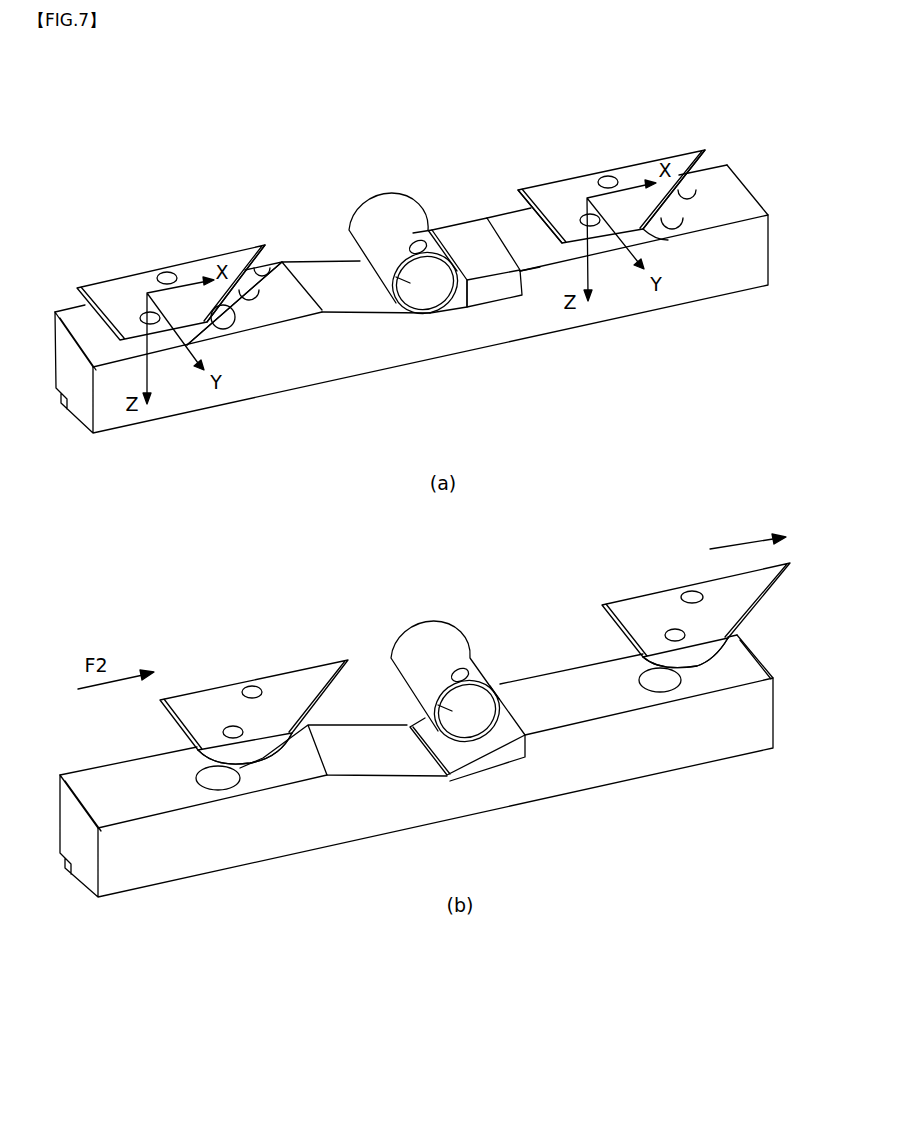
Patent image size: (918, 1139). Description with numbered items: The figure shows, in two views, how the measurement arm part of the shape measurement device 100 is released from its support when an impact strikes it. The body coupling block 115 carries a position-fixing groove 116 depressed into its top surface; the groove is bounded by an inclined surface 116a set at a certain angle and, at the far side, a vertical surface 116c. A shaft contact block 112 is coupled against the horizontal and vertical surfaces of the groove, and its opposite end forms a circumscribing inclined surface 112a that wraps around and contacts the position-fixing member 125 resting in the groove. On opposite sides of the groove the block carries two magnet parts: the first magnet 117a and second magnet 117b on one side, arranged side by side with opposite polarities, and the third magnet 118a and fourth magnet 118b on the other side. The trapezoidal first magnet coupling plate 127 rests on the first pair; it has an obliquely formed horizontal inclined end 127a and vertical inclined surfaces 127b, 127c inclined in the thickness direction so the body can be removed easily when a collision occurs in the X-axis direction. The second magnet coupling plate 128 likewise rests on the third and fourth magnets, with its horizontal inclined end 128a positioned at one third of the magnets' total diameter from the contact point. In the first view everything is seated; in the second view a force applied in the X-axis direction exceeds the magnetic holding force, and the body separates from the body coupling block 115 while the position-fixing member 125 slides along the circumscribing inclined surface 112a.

The shape measurement device 100 is at (183, 183).
The shaft contact block 112 is at (460, 236).
The circumscribing inclined surface 112a is at (463, 304).
The body coupling block 115 is at (298, 372).
The position-fixing groove 116 is at (425, 314).
The inclined surface 116a is at (352, 294).
The vertical surface 116c is at (530, 282).
The first magnet 117a is at (690, 188).
The second magnet 117b is at (704, 206).
The third magnet 118a is at (252, 262).
The fourth magnet 118b is at (238, 326).
The position-fixing member 125 is at (372, 206).
The first magnet coupling plate 127 is at (565, 190).
The horizontal inclined end 127a is at (694, 148).
The vertical inclined surface 127b is at (668, 240).
The vertical inclined surface 127c is at (540, 252).
The second magnet coupling plate 128 is at (110, 284).
The horizontal inclined end 128a is at (257, 277).